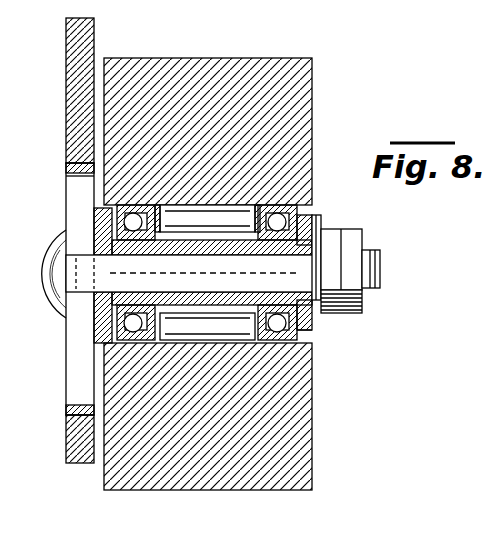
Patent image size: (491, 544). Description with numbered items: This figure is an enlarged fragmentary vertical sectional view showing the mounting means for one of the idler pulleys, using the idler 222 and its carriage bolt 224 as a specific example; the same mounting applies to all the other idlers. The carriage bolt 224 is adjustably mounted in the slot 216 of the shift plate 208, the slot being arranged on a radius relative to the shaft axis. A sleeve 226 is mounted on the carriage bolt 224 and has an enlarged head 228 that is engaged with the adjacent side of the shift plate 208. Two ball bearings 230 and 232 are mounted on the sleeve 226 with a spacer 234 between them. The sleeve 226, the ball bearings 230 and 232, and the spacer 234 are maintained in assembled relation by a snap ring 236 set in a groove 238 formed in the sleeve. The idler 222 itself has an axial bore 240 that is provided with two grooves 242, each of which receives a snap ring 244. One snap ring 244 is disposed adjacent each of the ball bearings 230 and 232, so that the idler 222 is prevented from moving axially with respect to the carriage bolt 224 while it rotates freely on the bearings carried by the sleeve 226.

The shift plate 208 is at (82, 30).
The slot 216 is at (72, 180).
The idler 222 is at (218, 58).
The carriage bolt 224 is at (380, 260).
The sleeve 226 is at (321, 236).
The enlarged head 228 is at (93, 351).
The ball bearing 230 is at (138, 338).
The ball bearing 232 is at (300, 330).
The spacer 234 is at (207, 327).
The snap ring 236 is at (306, 220).
The groove 238 is at (300, 262).
The axial bore 240 is at (312, 340).
The grooves 242 is at (157, 203).
The snap ring 244 is at (170, 208).